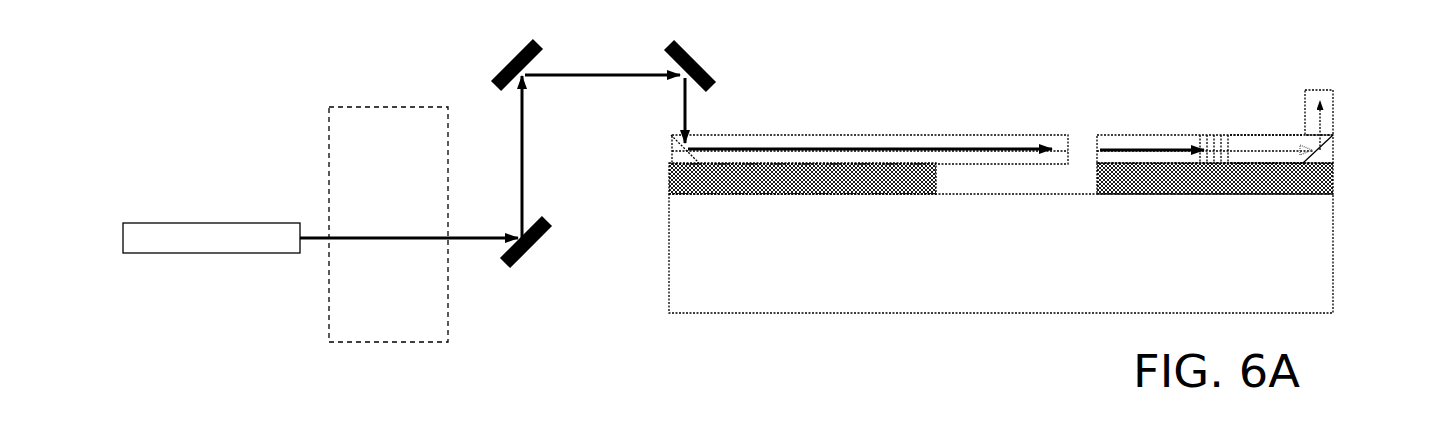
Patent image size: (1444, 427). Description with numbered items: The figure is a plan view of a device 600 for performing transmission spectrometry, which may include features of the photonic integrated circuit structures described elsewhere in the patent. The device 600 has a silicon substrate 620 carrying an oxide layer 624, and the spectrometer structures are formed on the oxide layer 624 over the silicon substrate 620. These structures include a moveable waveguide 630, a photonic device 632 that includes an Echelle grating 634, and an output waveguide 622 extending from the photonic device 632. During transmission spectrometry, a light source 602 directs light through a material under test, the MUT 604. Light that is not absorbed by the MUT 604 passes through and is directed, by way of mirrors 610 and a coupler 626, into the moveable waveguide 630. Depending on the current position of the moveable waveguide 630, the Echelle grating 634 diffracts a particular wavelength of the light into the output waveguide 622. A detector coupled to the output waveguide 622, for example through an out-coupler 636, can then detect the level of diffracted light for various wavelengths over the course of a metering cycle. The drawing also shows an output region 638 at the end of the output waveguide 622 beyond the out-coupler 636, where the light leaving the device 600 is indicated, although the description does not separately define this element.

The device 600 is at (174, 93).
The light source 602 is at (211, 203).
The material under test (MUT) 604 is at (409, 168).
The mirrors 610 is at (519, 50).
The silicon substrate 620 is at (1022, 264).
The output waveguide 622 is at (1273, 131).
The oxide layer 624 is at (666, 180).
The coupler 626 is at (670, 147).
The moveable waveguide 630 is at (1027, 132).
The photonic device 632 is at (1142, 131).
The Echelle grating 634 is at (1215, 132).
The out-coupler 636 is at (1335, 153).
The output port 638 is at (1319, 88).